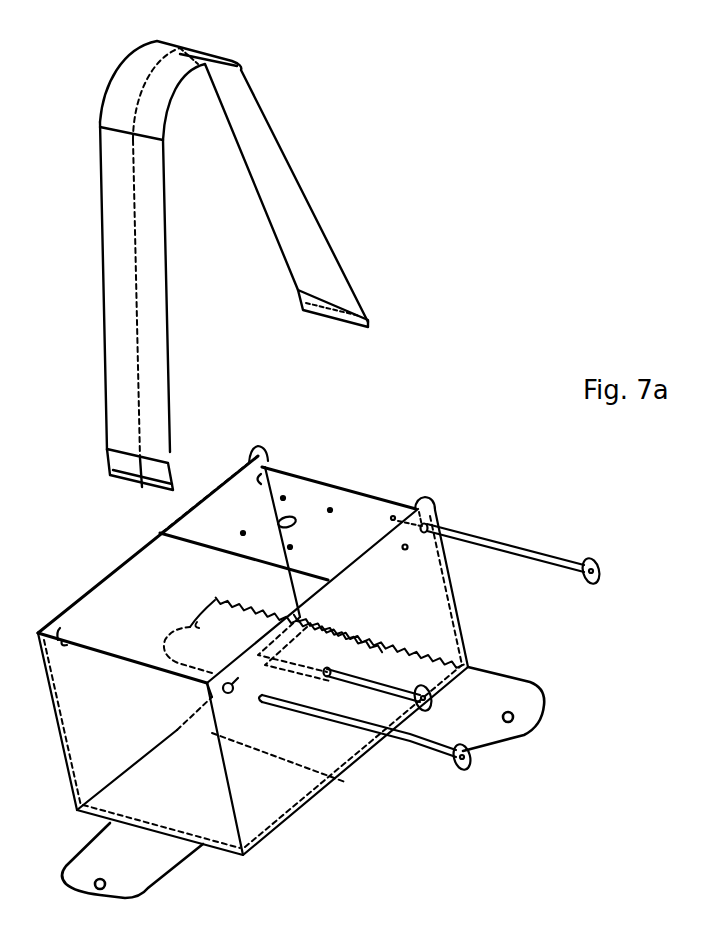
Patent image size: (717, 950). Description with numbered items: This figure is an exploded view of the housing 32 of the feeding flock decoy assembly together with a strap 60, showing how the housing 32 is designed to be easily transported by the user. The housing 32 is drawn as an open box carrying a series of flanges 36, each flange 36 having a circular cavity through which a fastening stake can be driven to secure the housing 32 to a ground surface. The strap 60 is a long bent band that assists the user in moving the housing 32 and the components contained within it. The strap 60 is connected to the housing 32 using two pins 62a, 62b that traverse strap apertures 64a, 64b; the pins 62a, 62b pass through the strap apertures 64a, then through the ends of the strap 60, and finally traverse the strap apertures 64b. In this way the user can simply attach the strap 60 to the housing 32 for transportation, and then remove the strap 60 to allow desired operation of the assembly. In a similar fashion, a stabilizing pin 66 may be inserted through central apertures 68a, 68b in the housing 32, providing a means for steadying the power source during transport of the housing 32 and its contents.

The housing 32 is at (125, 719).
The flanges 36 is at (497, 697).
The strap 60 is at (300, 212).
The pin 62a is at (406, 750).
The pin 62b is at (563, 557).
The strap apertures 64a is at (433, 503).
The strap apertures 64b is at (268, 466).
The stabilizing pin 66 is at (377, 687).
The central aperture 68a is at (338, 648).
The central aperture 68b is at (158, 624).